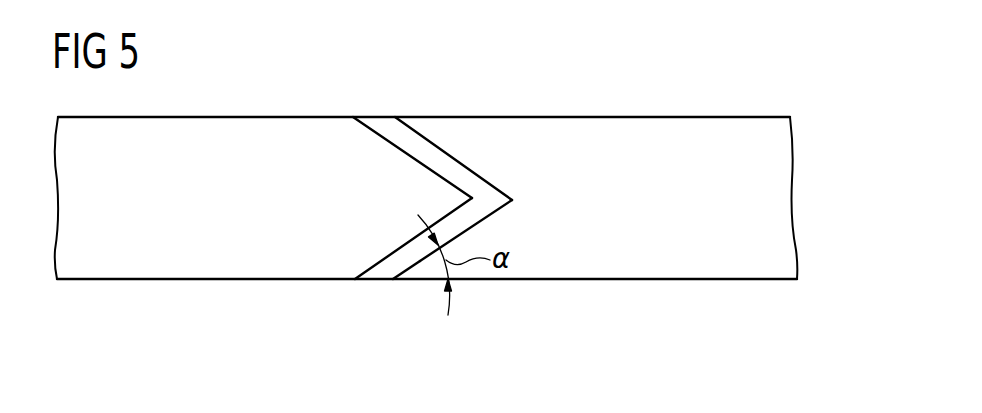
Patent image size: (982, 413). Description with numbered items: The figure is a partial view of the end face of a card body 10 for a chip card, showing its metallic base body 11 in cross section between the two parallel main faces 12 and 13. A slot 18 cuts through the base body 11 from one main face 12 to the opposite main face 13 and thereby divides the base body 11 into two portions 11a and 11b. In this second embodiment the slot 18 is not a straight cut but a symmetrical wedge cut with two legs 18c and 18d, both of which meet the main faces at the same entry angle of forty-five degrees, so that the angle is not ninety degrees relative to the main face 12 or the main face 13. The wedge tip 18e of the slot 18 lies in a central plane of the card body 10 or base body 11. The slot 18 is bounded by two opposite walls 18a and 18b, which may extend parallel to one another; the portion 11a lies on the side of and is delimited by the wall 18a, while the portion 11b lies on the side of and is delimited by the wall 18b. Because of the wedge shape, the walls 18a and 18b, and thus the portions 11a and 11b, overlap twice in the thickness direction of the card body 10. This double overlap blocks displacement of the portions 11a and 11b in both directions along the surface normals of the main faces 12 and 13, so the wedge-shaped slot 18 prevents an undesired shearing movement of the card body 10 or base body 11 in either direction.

The card body 10 is at (426, 211).
The metallic base body 11 is at (426, 202).
The first portion of the base body 11a is at (225, 270).
The second portion of the base body 11b is at (640, 270).
The main face 12 is at (598, 117).
The opposite main face 13 is at (523, 279).
The slot 18 is at (452, 208).
The first wall of the slot 18a is at (373, 267).
The second wall of the slot 18b is at (404, 272).
The first leg of the wedge cut 18c is at (430, 160).
The second leg of the wedge cut 18d is at (461, 225).
The wedge tip 18e is at (493, 194).